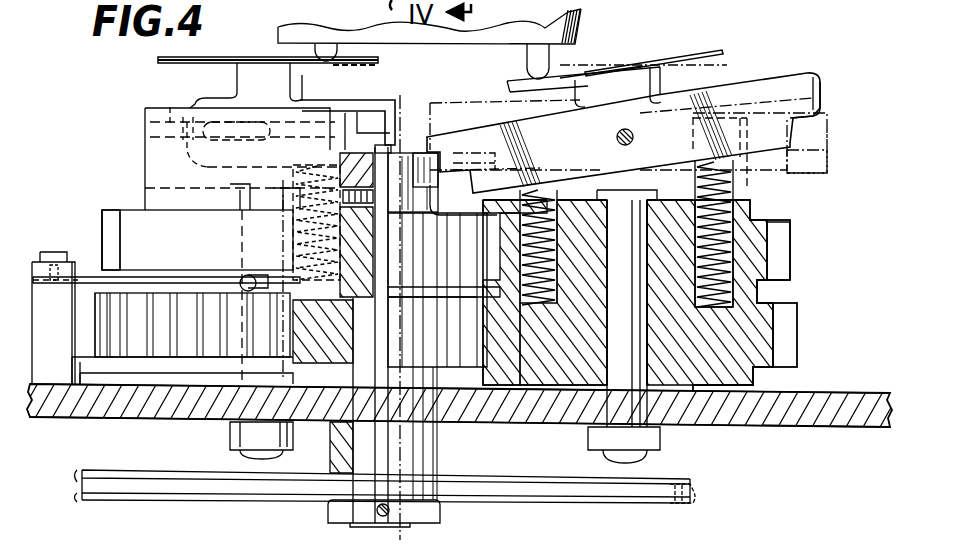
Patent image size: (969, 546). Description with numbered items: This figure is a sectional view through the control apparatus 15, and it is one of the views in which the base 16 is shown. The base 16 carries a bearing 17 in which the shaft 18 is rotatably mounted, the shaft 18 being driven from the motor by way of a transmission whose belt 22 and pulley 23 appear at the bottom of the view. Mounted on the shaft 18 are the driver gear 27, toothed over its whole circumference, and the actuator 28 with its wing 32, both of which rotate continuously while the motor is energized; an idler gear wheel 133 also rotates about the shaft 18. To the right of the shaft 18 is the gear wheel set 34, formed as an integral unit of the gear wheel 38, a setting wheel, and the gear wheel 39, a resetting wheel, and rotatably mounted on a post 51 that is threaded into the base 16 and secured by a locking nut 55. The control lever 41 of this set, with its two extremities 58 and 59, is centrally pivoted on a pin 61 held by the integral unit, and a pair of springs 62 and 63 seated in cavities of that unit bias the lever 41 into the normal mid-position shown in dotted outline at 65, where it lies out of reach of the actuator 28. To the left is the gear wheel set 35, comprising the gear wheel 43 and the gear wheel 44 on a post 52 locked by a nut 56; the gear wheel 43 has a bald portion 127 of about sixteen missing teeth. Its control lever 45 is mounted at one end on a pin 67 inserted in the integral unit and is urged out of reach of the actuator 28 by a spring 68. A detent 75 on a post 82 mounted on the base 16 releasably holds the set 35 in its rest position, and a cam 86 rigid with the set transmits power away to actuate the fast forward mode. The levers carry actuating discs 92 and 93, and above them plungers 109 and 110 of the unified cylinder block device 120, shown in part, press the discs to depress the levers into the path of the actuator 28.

The control apparatus 15 is at (659, 296).
The base 16 is at (800, 393).
The bearing 17 is at (440, 448).
The shaft 18 is at (410, 145).
The belt 22 is at (176, 482).
The pulley 23 is at (668, 481).
The driver gear 27 is at (455, 255).
The actuator 28 is at (418, 148).
The wing 32 is at (455, 156).
The gear wheel set 34 is at (793, 262).
The gear wheel set 35 is at (100, 216).
The gear wheel 38 is at (772, 220).
The gear wheel 39 is at (798, 321).
The control lever 41 is at (654, 121).
The gear wheel 43 is at (107, 210).
The gear wheel 44 is at (160, 345).
The control lever 45 is at (385, 100).
The post 51 is at (650, 335).
The post 52 is at (243, 249).
The locking nut 55 is at (662, 439).
The locking nut 56 is at (228, 433).
The extremity 58 is at (440, 135).
The extremity 59 is at (803, 80).
The pin 61 is at (617, 139).
The spring 62 is at (553, 233).
The spring 63 is at (692, 233).
The normal mid-position 65 is at (830, 137).
The pin 67 is at (170, 118).
The spring 68 is at (293, 233).
The detent 75 is at (90, 276).
The post 82 is at (53, 318).
The cam 86 is at (82, 365).
The actuating disc 92 is at (200, 57).
The actuating disc 93 is at (712, 50).
The plunger 109 is at (570, 51).
The plunger 110 is at (340, 50).
The integral cylinder block device 120 is at (585, 15).
The bald portion 127 is at (137, 220).
The idler gear wheel 133 is at (457, 348).